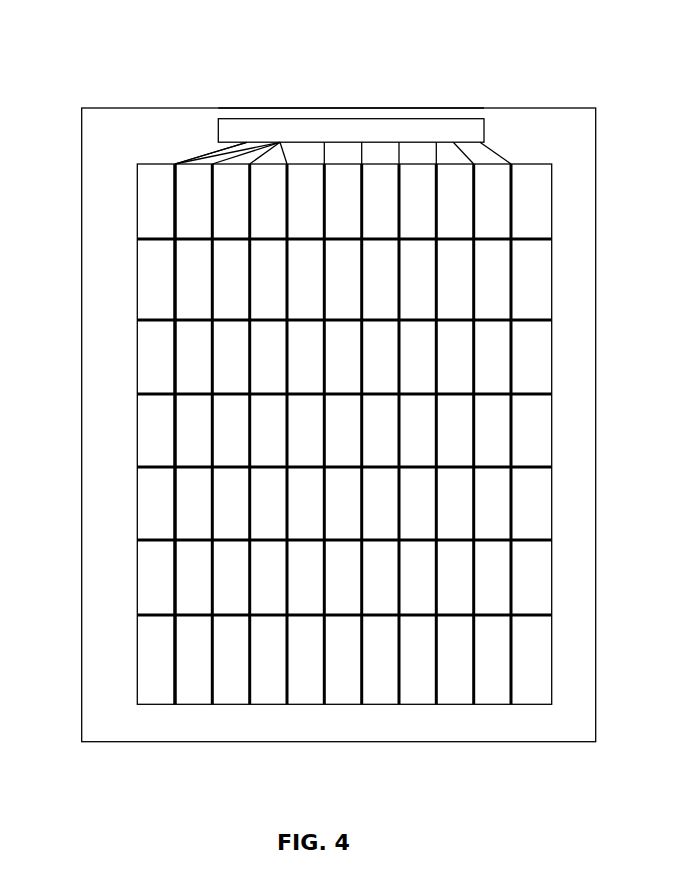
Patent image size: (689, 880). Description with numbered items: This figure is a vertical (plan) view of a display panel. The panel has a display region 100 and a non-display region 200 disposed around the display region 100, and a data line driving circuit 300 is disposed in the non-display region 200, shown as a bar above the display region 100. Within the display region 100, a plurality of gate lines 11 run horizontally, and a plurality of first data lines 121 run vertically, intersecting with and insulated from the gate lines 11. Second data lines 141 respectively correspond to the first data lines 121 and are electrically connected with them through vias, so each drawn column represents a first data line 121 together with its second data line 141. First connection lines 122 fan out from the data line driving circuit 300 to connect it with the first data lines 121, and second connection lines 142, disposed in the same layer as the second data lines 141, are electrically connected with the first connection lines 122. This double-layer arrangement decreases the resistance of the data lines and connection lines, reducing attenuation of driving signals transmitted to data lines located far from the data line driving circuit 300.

The display region 100 is at (529, 163).
The non-display region 200 is at (492, 122).
The data line driving circuit 300 is at (387, 127).
The gate lines 11 is at (153, 239).
The first data lines 121 is at (174, 190).
The second data lines 141 is at (133, 379).
The first connection lines 122 is at (212, 151).
The second connection lines 142 is at (211, 153).